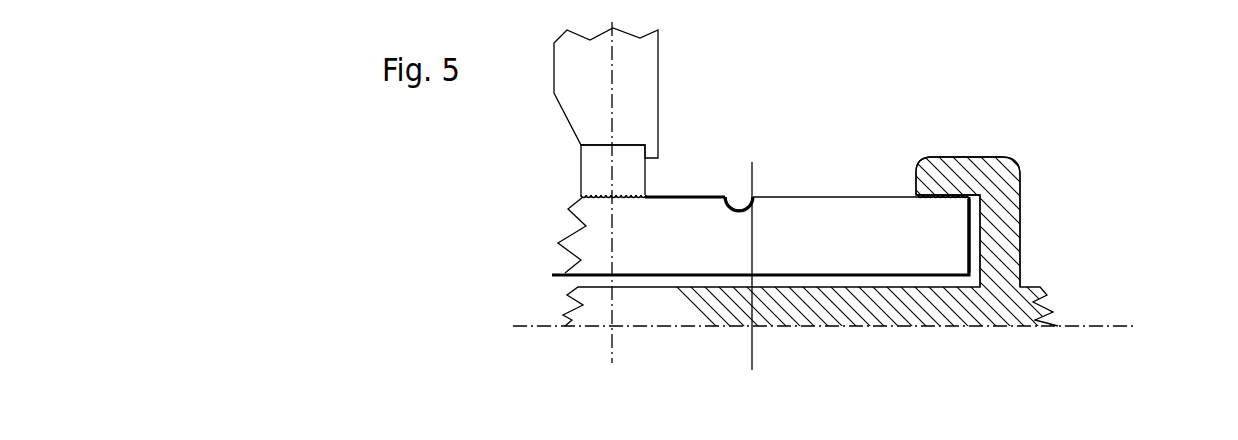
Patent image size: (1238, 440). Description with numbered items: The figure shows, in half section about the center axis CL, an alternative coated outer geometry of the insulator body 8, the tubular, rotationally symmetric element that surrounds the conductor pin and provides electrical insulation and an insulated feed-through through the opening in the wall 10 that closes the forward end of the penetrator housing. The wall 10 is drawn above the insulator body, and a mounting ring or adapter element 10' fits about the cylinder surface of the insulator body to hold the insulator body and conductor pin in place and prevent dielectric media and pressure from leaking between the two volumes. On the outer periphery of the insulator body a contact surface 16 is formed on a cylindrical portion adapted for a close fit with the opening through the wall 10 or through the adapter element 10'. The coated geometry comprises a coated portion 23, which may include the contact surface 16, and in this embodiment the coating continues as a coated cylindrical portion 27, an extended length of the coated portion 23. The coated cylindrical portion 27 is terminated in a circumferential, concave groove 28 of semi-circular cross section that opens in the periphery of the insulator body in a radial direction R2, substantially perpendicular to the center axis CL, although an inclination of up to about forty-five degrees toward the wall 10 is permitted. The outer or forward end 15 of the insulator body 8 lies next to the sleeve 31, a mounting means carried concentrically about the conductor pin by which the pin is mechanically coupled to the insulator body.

The wall 10 is at (637, 93).
The adapter element 10' is at (654, 170).
The contact surface 16 is at (600, 191).
The coated portion 23 is at (631, 200).
The coated cylindrical portion 27 is at (682, 200).
The groove 28 is at (747, 190).
The radial direction R2 is at (752, 233).
The insulator body 8 is at (897, 254).
The sleeve 31 is at (1022, 197).
The forward end 15 is at (971, 240).
The center axis CL is at (1110, 326).